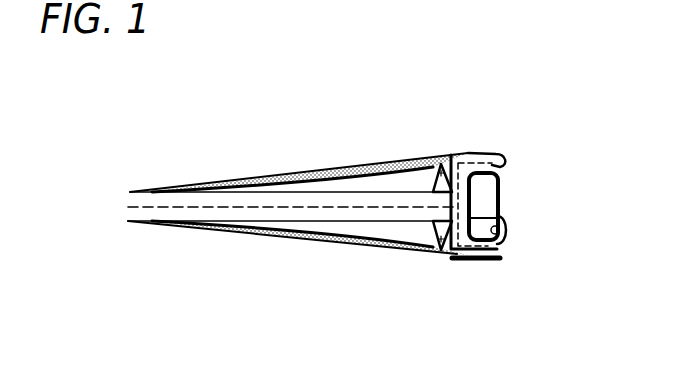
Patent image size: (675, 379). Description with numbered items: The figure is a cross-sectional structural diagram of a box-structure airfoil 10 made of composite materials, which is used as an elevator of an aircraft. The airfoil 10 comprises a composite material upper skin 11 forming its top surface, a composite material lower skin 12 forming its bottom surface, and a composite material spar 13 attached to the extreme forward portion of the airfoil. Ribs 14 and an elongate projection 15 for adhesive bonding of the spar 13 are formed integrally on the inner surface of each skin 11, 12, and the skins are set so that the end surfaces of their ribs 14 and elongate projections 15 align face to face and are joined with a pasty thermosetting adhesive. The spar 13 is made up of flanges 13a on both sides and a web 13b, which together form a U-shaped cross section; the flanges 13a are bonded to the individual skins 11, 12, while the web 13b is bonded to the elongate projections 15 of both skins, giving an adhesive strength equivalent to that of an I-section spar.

The box-structure airfoil 10 is at (505, 109).
The upper skin 11 is at (316, 172).
The lower skin 12 is at (298, 240).
The spar 13 is at (527, 193).
The flanges 13a is at (505, 158).
The web 13b is at (507, 224).
The ribs 14 is at (382, 166).
The elongate projection 15 is at (442, 166).